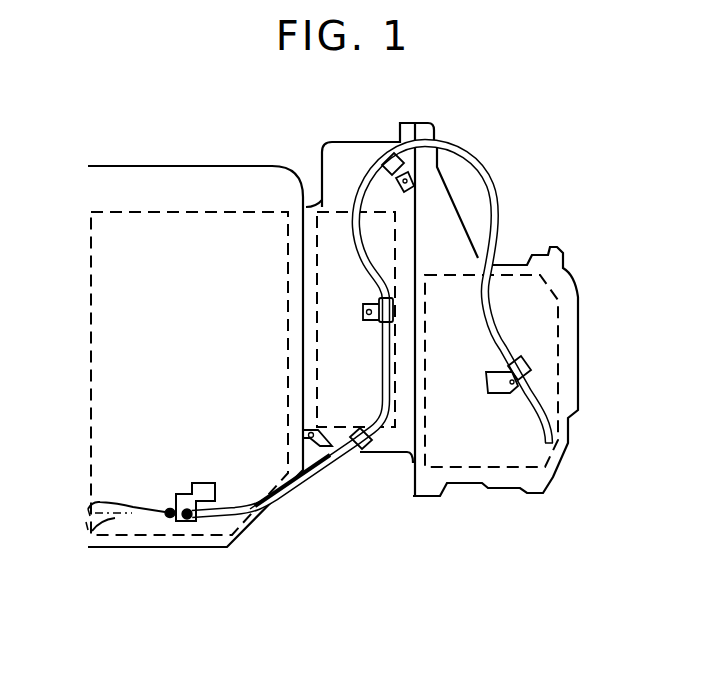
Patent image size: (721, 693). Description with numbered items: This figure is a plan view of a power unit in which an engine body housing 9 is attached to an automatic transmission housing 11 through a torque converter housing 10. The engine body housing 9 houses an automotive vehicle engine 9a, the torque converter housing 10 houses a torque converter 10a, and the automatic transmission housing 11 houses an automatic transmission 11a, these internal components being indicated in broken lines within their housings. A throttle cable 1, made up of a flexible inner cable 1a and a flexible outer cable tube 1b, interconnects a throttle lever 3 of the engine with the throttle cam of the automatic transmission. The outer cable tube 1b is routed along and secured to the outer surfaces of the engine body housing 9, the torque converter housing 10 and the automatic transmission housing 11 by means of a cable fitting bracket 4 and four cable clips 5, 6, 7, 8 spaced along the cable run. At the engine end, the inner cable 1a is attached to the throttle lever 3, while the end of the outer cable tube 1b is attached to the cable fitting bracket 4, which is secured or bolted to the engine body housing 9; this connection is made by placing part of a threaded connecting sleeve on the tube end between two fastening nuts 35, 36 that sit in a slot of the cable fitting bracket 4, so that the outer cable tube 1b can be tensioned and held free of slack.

The throttle cable 1 is at (497, 187).
The inner cable 1a is at (153, 505).
The outer cable tube 1b is at (268, 511).
The throttle lever 3 is at (86, 528).
The cable fitting bracket 4 is at (212, 483).
The cable clip 5 is at (367, 454).
The cable clip 6 is at (394, 306).
The cable clip 7 is at (388, 168).
The cable clip 8 is at (492, 388).
The engine body housing 9 is at (203, 186).
The automotive vehicle engine 9a is at (131, 232).
The torque converter housing 10 is at (333, 163).
The torque converter 10a is at (333, 265).
The automatic transmission housing 11 is at (543, 478).
The automatic transmission 11a is at (565, 305).
The fastening nut 35 is at (190, 524).
The fastening nut 36 is at (174, 520).